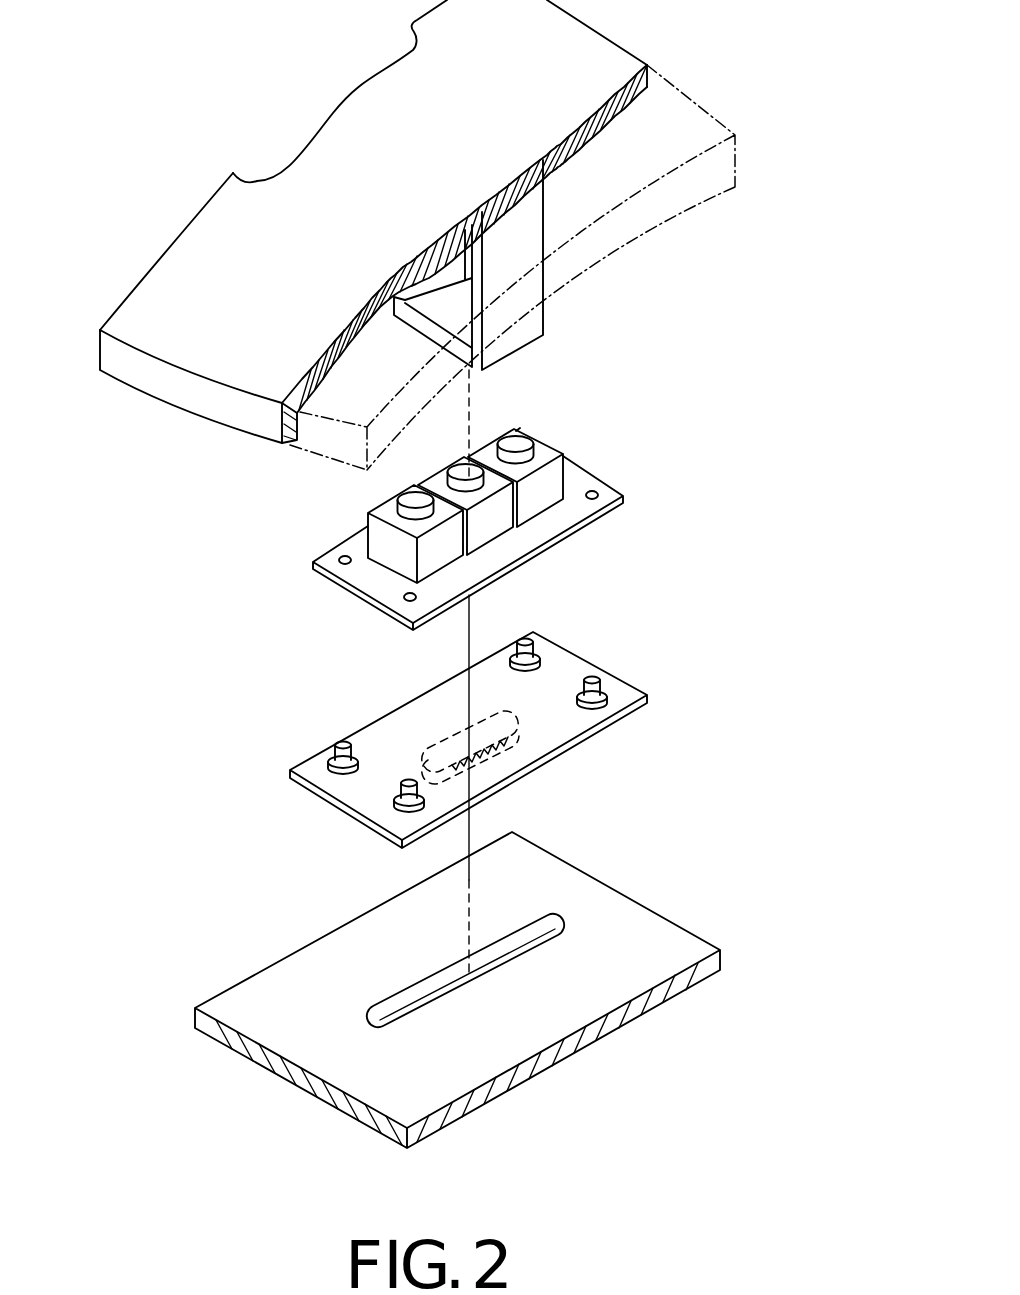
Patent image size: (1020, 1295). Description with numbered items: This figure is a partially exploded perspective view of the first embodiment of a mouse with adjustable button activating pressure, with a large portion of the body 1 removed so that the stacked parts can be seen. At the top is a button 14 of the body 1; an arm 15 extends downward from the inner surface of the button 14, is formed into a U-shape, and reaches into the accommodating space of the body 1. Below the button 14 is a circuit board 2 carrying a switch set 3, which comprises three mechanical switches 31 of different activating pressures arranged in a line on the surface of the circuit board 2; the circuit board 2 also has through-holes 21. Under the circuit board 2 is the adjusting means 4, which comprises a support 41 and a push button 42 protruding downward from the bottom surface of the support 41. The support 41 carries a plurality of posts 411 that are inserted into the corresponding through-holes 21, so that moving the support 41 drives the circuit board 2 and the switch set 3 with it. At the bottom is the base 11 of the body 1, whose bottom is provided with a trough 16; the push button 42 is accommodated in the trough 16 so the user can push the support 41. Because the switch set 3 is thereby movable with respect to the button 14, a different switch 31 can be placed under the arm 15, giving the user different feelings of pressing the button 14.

The body 1 is at (415, 992).
The base 11 is at (335, 1058).
The button 14 is at (237, 335).
The arm 15 is at (517, 250).
The trough 16 is at (417, 993).
The circuit board 2 is at (512, 496).
The through-hole 21 is at (607, 488).
The switch set 3 is at (513, 488).
The switch 31 is at (535, 493).
The adjusting means 4 is at (528, 736).
The support 41 is at (558, 727).
The post 411 is at (593, 675).
The push button 42 is at (450, 752).